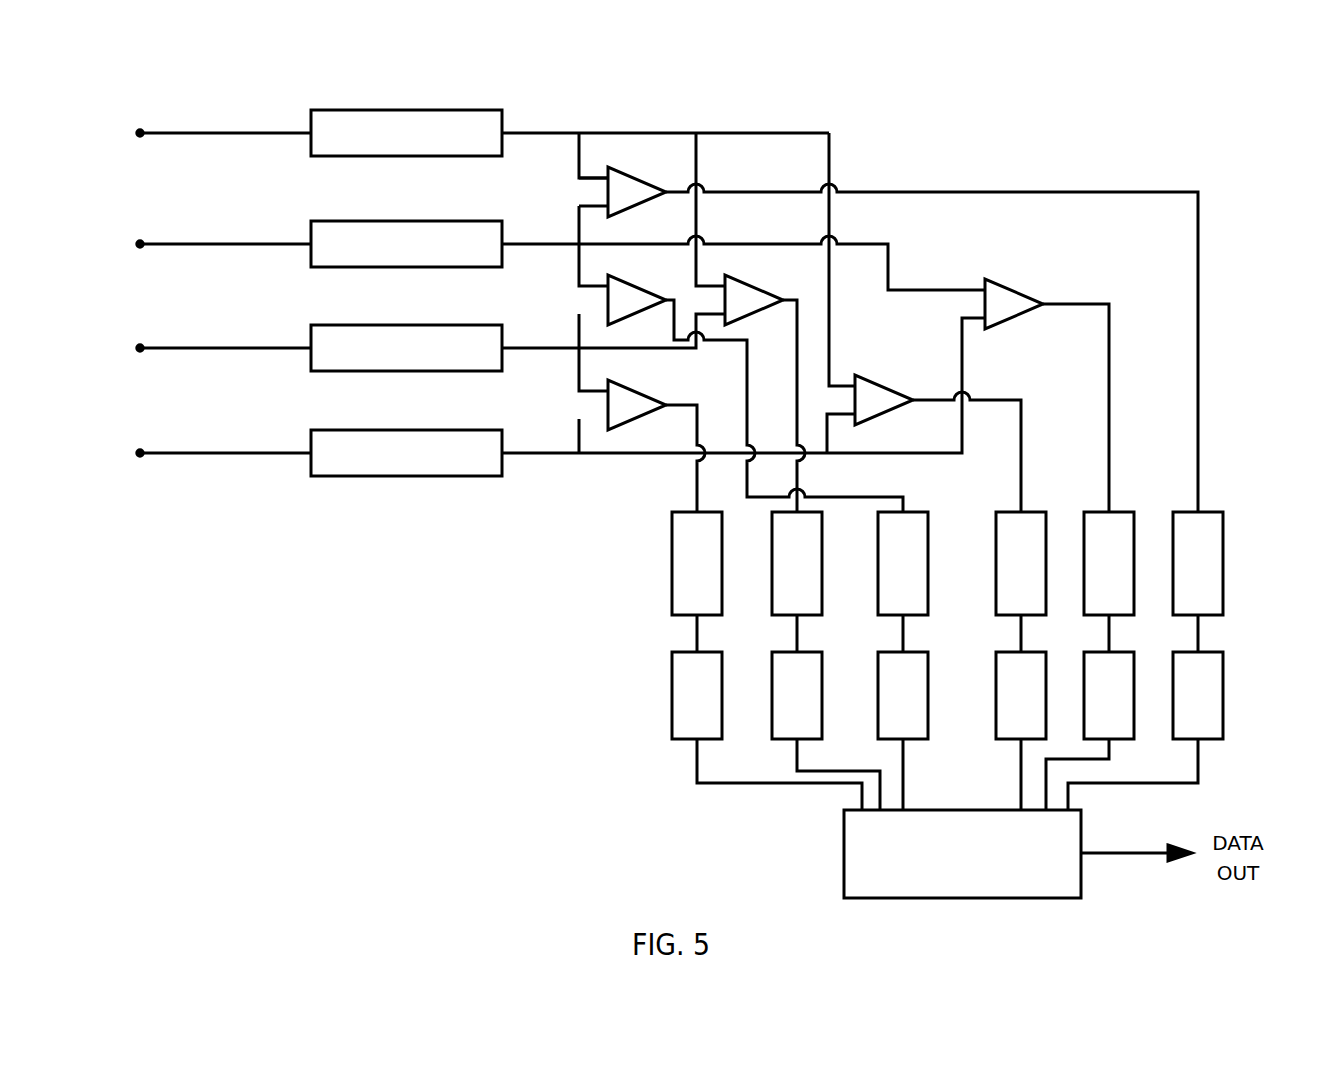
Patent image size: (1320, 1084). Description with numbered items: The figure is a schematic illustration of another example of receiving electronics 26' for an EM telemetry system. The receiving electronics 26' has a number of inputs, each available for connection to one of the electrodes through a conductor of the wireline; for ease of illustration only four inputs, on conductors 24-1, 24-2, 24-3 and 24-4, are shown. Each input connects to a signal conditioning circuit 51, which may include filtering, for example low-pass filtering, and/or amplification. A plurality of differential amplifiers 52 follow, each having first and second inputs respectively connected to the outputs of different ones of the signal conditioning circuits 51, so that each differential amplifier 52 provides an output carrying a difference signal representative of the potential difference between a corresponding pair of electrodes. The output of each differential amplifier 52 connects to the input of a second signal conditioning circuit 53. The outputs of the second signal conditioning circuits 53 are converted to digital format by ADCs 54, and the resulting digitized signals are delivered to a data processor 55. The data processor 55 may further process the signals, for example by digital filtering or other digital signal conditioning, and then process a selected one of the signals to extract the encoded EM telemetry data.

The receiving electronics 26' is at (1163, 88).
The conductor 24-1 is at (160, 133).
The conductor 24-2 is at (160, 244).
The conductor 24-3 is at (160, 348).
The conductor 24-4 is at (160, 453).
The signal conditioning circuit 51 is at (410, 110).
The differential amplifier 52 is at (633, 176).
The second signal conditioning circuit 53 is at (947, 563).
The ADC 54 is at (947, 695).
The data processor 55 is at (962, 854).